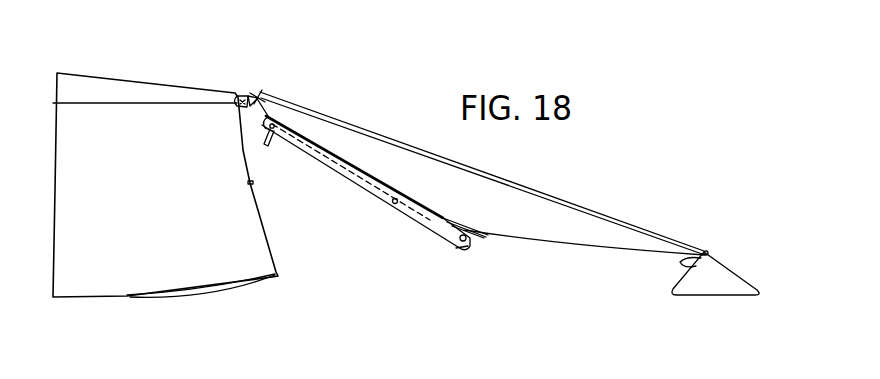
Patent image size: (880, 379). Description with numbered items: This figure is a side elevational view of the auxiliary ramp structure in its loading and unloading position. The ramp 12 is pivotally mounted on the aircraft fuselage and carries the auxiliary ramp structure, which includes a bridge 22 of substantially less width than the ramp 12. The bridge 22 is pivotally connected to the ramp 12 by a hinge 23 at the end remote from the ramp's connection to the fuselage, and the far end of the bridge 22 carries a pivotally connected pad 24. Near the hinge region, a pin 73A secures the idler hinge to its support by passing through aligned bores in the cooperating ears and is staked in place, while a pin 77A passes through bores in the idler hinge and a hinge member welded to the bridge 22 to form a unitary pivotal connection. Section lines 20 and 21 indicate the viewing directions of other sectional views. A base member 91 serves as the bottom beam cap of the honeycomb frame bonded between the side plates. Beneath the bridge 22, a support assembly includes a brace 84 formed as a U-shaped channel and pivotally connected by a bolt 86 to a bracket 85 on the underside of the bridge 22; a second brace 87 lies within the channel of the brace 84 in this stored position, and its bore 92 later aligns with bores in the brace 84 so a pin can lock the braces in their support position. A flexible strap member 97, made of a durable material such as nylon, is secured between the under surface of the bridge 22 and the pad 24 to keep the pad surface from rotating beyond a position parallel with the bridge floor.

The ramp 12 is at (118, 300).
The section line 20 is at (273, 124).
The section line 21 is at (486, 210).
The bridge 22 is at (590, 252).
The hinge 23 is at (241, 113).
The pad 24 is at (743, 271).
The pin 73A is at (243, 95).
The pin 77A is at (257, 100).
The brace 84 is at (427, 228).
The bracket 85 is at (483, 237).
The bolt 86 is at (462, 251).
The second brace 87 is at (328, 163).
The base member 91 is at (255, 186).
The bore 92 is at (392, 206).
The strap member 97 is at (684, 271).